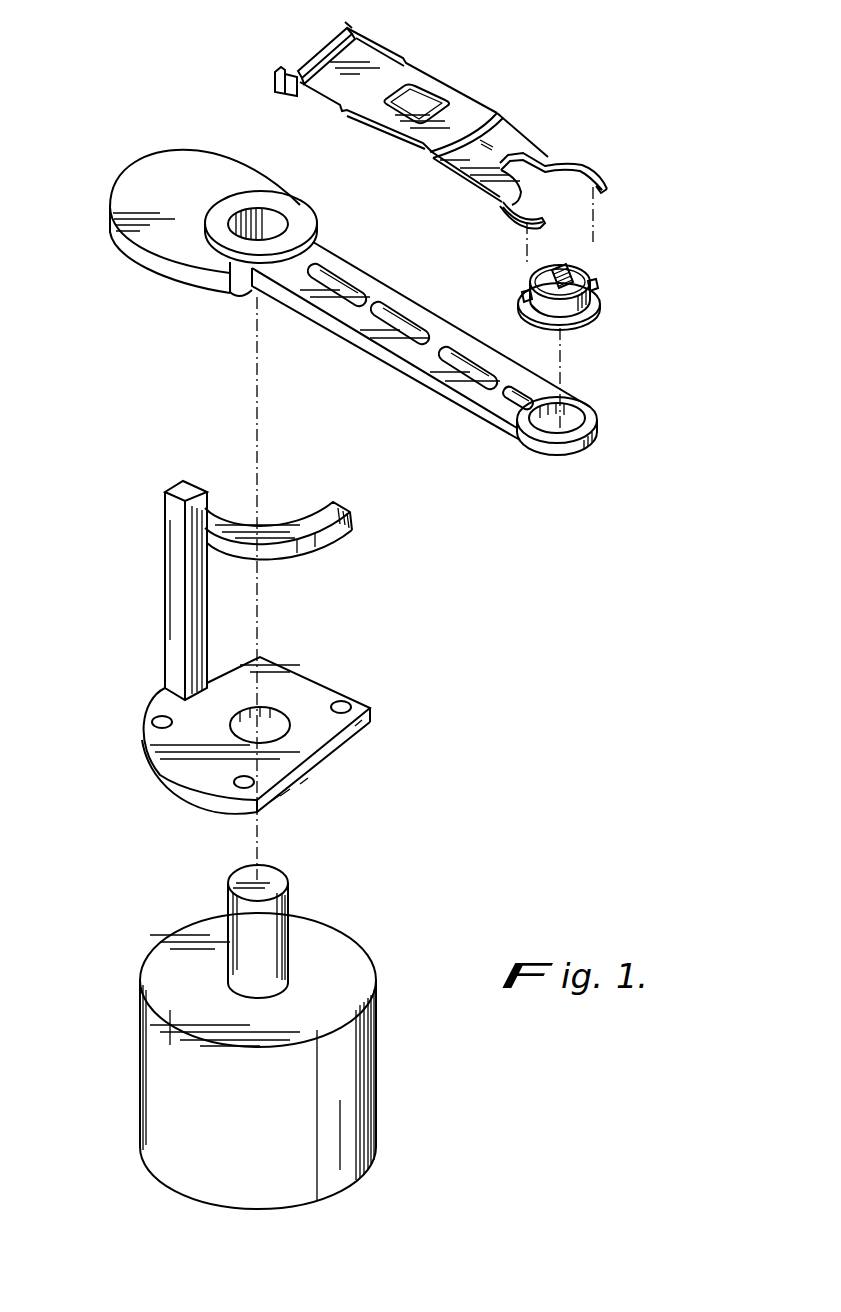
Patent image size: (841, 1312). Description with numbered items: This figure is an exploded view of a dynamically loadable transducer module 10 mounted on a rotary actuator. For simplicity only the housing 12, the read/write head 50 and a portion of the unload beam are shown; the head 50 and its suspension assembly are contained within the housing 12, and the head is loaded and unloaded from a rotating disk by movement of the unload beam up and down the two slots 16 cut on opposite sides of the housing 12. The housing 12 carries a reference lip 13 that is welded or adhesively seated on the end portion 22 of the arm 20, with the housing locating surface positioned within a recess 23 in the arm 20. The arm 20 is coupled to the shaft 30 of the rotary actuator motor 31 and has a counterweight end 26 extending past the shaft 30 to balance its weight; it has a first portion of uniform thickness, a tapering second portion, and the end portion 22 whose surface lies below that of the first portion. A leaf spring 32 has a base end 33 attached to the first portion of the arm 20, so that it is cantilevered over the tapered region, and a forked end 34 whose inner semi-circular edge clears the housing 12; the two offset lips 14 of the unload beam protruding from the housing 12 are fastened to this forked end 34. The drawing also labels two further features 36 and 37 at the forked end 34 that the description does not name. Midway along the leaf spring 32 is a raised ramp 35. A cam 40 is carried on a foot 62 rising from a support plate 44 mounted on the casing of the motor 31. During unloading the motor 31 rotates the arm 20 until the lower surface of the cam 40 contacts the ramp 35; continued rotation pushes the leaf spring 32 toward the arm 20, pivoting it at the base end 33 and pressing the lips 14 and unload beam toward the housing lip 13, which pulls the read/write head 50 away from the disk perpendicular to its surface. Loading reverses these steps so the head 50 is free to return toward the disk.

The dynamically loadable transducer module 10 is at (607, 293).
The housing 12 is at (568, 311).
The lip 13 is at (596, 307).
The ends of the unload beam 14 is at (522, 292).
The slots 16 is at (547, 312).
The arm 20 is at (190, 290).
The end portion 22 is at (567, 447).
The recess 23 is at (574, 422).
The counterweight end 26 is at (167, 163).
The shaft 30 is at (283, 892).
The rotary actuator motor 31 is at (143, 1040).
The leaf spring 32 is at (412, 40).
The base end 33 is at (340, 42).
The forked end 34 is at (556, 157).
The ramp 35 is at (488, 112).
The hook tip 36 is at (596, 170).
The curl 37 is at (502, 198).
The cam 40 is at (294, 520).
The support plate 44 is at (310, 690).
The read/write head 50 is at (560, 266).
The foot 62 is at (163, 542).